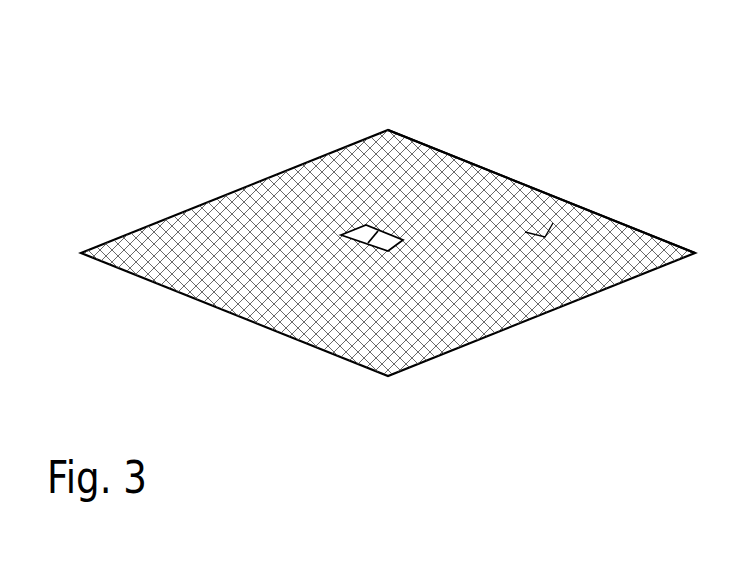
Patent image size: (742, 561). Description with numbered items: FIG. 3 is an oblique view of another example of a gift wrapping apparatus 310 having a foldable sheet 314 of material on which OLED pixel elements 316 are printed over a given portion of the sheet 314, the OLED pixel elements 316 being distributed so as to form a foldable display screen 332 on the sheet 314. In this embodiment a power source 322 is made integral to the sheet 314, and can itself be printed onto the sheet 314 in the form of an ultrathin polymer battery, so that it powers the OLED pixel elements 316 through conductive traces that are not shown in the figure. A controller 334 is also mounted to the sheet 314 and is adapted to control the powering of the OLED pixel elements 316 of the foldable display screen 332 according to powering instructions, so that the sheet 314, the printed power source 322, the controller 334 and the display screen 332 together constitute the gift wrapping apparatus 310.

The gift wrapping apparatus 310 is at (174, 130).
The foldable sheet 314 is at (618, 232).
The OLED pixel elements 316 is at (553, 223).
The power source 322 is at (387, 232).
The foldable display screen 332 is at (566, 288).
The controller 334 is at (364, 227).